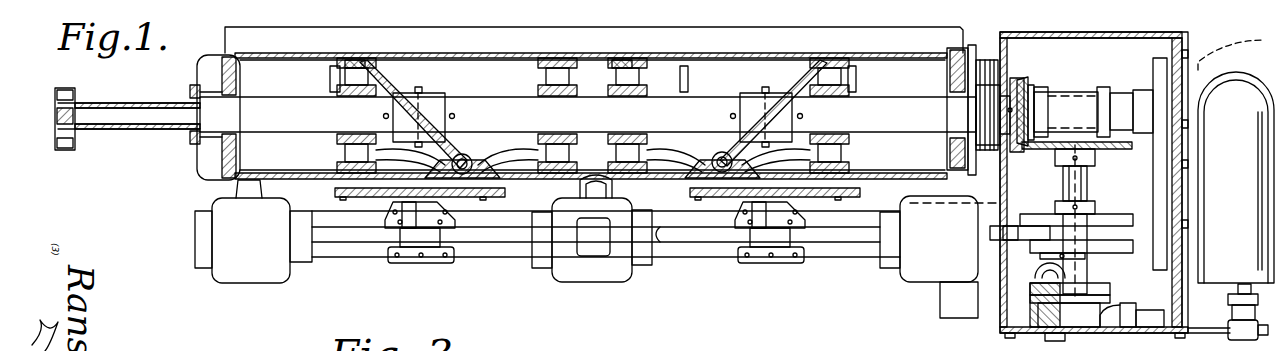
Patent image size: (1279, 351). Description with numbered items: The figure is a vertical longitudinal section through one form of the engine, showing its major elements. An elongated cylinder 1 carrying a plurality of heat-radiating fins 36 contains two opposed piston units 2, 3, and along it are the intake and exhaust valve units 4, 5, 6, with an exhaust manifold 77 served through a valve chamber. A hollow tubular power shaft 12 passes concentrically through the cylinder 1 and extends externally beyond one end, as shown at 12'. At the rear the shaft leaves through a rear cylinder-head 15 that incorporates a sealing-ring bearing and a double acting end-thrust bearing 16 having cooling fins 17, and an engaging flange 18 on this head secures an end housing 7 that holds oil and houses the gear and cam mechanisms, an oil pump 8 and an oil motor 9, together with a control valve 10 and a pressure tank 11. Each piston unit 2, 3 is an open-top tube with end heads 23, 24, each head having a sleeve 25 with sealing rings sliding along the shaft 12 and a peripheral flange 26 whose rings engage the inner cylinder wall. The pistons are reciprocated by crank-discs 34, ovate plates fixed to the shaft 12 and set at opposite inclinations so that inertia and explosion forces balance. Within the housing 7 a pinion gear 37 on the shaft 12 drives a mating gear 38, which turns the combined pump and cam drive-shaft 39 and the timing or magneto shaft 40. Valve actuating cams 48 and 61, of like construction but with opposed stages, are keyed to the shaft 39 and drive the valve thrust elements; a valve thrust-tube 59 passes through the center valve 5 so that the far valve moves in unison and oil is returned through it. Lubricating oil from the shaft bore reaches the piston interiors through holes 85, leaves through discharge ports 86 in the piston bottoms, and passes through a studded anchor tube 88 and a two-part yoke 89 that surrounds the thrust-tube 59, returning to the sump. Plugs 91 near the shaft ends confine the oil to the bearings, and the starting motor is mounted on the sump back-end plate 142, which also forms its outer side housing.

The cylinder 1 is at (235, 55).
The piston unit 2 is at (38, 120).
The piston unit 3 is at (808, 180).
The intake and exhaust valve unit 4 is at (245, 45).
The center valve unit 5 is at (588, 270).
The intake and exhaust valve unit 6 is at (905, 275).
The end housing 7 is at (1168, 300).
The oil pump 8 is at (1085, 333).
The oil motor 9 is at (178, 240).
The control valve 10 is at (522, 236).
The pressure tank 11 is at (1246, 198).
The hollow tubular power shaft 12 is at (588, 102).
The external shaft extension 12' is at (129, 133).
The rear cylinder-head 15 is at (968, 55).
The double acting end-thrust bearing 16 is at (1022, 80).
The cooling fins 17 is at (980, 60).
The engaging flange 18 is at (998, 65).
The end head 23 is at (360, 60).
The end head 24 is at (560, 57).
The sleeve 25 is at (330, 80).
The peripheral flange 26 is at (352, 60).
The crank-disc 34 is at (405, 60).
The fins 36 is at (450, 52).
The pinion gear 37 is at (1022, 82).
The mating gear 38 is at (1115, 125).
The combined pump and cam drive-shaft 39 is at (1062, 180).
The timing or magneto shaft 40 is at (1020, 333).
The valve actuating cam 48 is at (1118, 214).
The valve thrust-tube 59 is at (718, 247).
The valve actuating cam 61 is at (1115, 245).
The exhaust manifold 77 is at (492, 262).
The holes 85 is at (440, 115).
The discharge ports 86 is at (338, 158).
The studded anchor tube 88 is at (415, 215).
The yoke 89 is at (450, 262).
The plugs 91 is at (58, 115).
The sump back-end plate 142 is at (1185, 90).